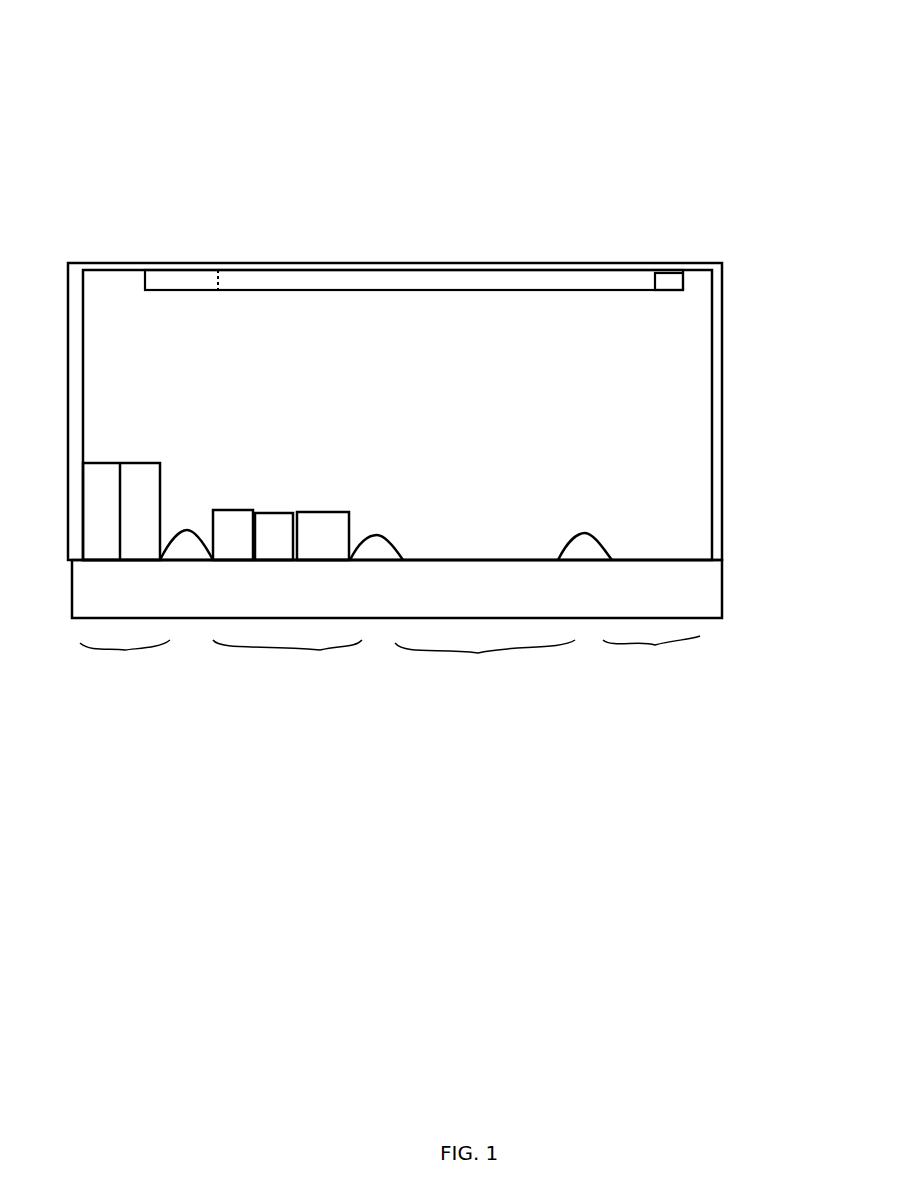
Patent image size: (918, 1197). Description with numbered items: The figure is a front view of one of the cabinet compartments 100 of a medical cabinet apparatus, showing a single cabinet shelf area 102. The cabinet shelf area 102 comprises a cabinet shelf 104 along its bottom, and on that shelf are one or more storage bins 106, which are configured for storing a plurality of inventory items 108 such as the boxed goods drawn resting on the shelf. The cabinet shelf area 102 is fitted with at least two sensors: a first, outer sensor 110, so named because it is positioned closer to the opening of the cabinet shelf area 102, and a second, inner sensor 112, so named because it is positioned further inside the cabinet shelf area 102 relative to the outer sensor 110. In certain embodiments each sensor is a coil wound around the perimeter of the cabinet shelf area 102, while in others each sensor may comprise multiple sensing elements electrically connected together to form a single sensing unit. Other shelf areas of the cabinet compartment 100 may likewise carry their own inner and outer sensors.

The cabinet compartment 100 is at (202, 114).
The cabinet shelf area 102 is at (770, 268).
The cabinet shelf 104 is at (723, 604).
The storage bin 106 is at (390, 668).
The inventory item 108 is at (143, 460).
The outer sensor 110 is at (155, 280).
The inner sensor 112 is at (672, 278).